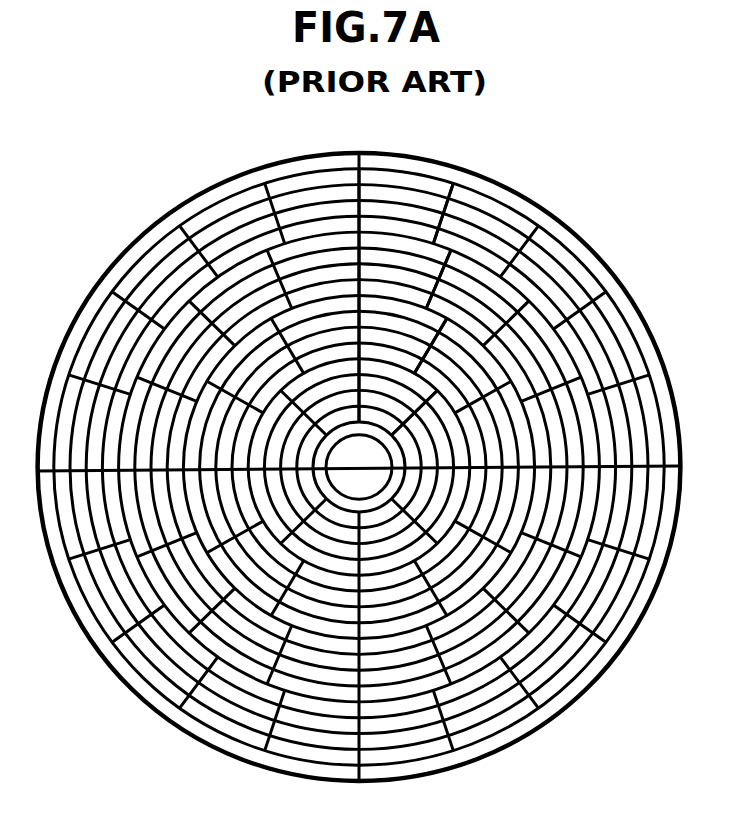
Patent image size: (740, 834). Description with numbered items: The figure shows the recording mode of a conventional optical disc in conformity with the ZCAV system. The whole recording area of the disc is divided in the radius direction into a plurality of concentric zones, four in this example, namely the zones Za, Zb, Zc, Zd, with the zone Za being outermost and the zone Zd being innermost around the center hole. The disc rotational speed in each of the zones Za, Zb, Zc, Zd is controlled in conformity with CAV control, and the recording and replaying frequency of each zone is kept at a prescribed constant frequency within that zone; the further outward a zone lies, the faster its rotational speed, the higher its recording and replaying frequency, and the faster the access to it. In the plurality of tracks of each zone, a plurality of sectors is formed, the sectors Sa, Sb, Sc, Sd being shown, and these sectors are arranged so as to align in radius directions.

The sector Sa is at (414, 200).
The sector Sb is at (412, 270).
The sector Sc is at (414, 338).
The sector Sd is at (414, 401).
The zone Za is at (680, 462).
The zone Zb is at (600, 462).
The zone Zc is at (535, 462).
The zone Zd is at (470, 462).